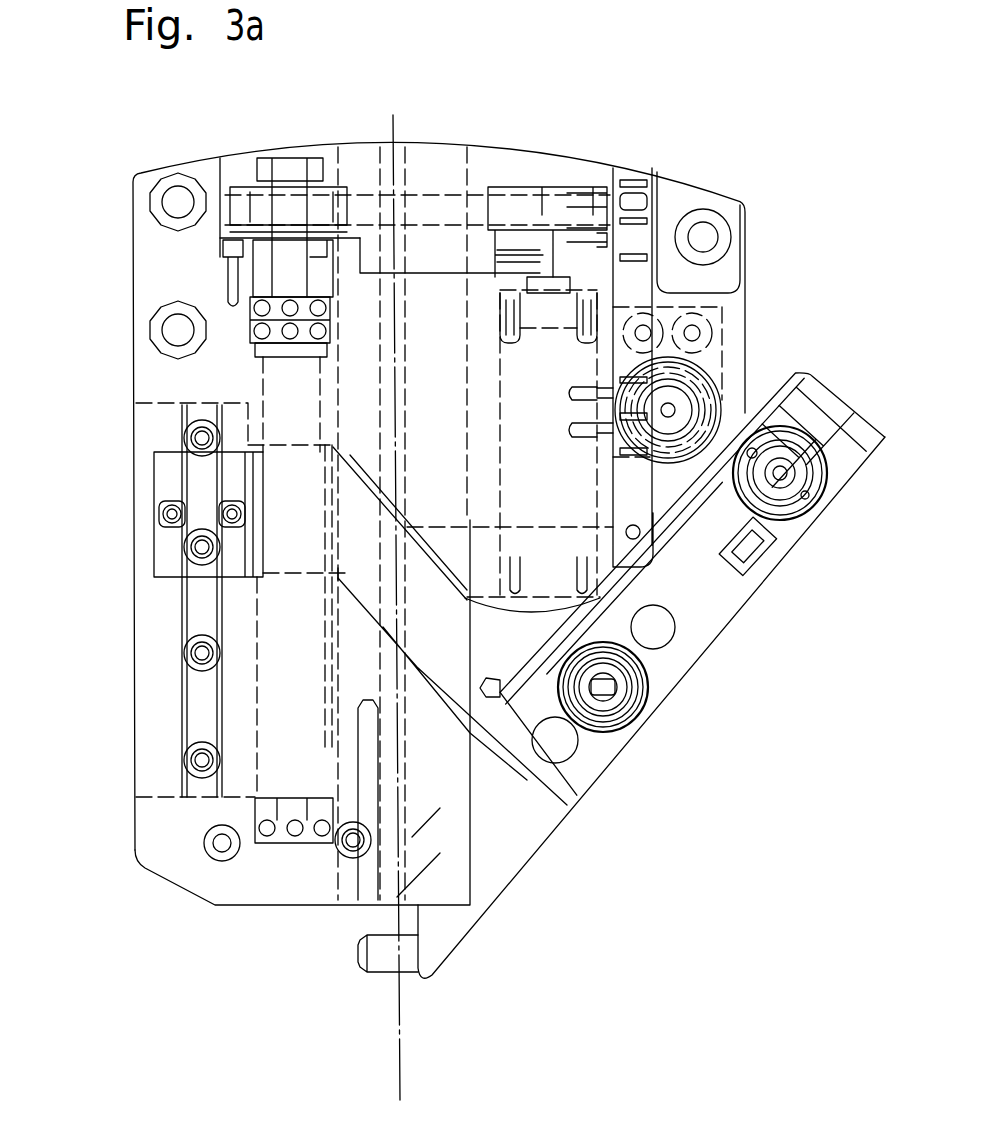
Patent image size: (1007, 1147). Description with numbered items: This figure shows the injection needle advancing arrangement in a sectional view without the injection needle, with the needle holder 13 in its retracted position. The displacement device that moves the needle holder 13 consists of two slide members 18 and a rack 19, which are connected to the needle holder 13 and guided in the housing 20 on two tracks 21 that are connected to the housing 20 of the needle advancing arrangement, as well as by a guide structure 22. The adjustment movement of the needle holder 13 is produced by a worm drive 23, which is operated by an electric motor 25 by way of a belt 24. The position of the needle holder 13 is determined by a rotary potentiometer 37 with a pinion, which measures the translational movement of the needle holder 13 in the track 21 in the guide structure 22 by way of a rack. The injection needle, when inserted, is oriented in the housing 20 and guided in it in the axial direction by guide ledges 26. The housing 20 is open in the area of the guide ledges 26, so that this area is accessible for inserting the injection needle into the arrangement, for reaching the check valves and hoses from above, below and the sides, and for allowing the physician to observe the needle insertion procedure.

The needle holder 13 is at (501, 854).
The slide members 18 is at (172, 550).
The rack 19 is at (633, 283).
The housing 20 is at (540, 170).
The tracks 21 is at (205, 705).
The guide structure 22 is at (637, 280).
The worm drive 23 is at (290, 403).
The belt 24 is at (440, 208).
The electric motor 25 is at (551, 517).
The guide ledges 26 is at (392, 167).
The rotary potentiometer 37 is at (707, 397).